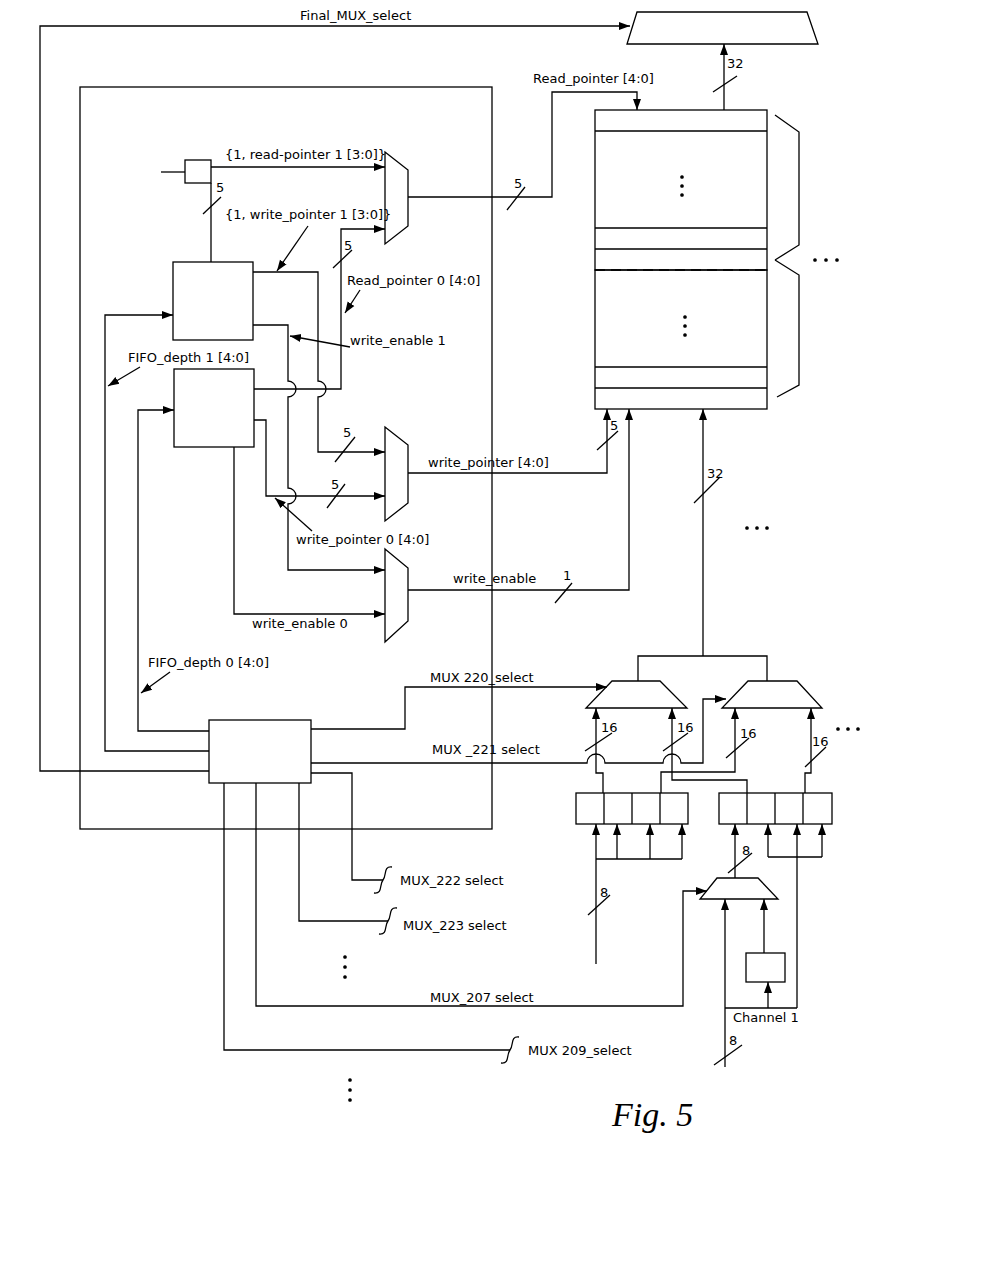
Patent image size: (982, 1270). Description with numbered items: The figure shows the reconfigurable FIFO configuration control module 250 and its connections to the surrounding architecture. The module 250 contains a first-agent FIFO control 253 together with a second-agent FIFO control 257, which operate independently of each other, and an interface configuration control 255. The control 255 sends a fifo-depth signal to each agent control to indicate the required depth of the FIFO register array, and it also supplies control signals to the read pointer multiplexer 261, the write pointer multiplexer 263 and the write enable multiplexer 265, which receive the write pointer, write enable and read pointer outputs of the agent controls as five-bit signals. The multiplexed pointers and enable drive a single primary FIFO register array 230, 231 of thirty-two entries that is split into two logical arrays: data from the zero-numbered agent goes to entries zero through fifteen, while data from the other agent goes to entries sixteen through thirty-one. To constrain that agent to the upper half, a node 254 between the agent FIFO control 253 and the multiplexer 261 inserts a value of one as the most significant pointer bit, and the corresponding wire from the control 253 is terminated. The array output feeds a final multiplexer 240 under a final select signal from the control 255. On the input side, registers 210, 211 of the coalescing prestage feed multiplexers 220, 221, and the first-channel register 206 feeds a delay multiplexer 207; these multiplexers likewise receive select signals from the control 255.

The final multiplexer 240 is at (718, 36).
The FIFO register array 230 is at (820, 86).
The FIFO register array 231 is at (716, 190).
The reconfigurable FIFO configuration control module 250 is at (498, 330).
The agent 1 FIFO control 253 is at (183, 276).
The node 254 is at (195, 163).
The interface configuration control 255 is at (298, 727).
The agent 0 FIFO control 257 is at (201, 434).
The read pointer multiplexer 261 is at (402, 185).
The write pointer multiplexer 263 is at (400, 460).
The write enable multiplexer 265 is at (402, 582).
The multiplexer 220 is at (633, 690).
The multiplexer 221 is at (782, 688).
The register 210 is at (585, 817).
The register 211 is at (725, 822).
The delay multiplexer 207 is at (716, 900).
The register 206 is at (762, 962).